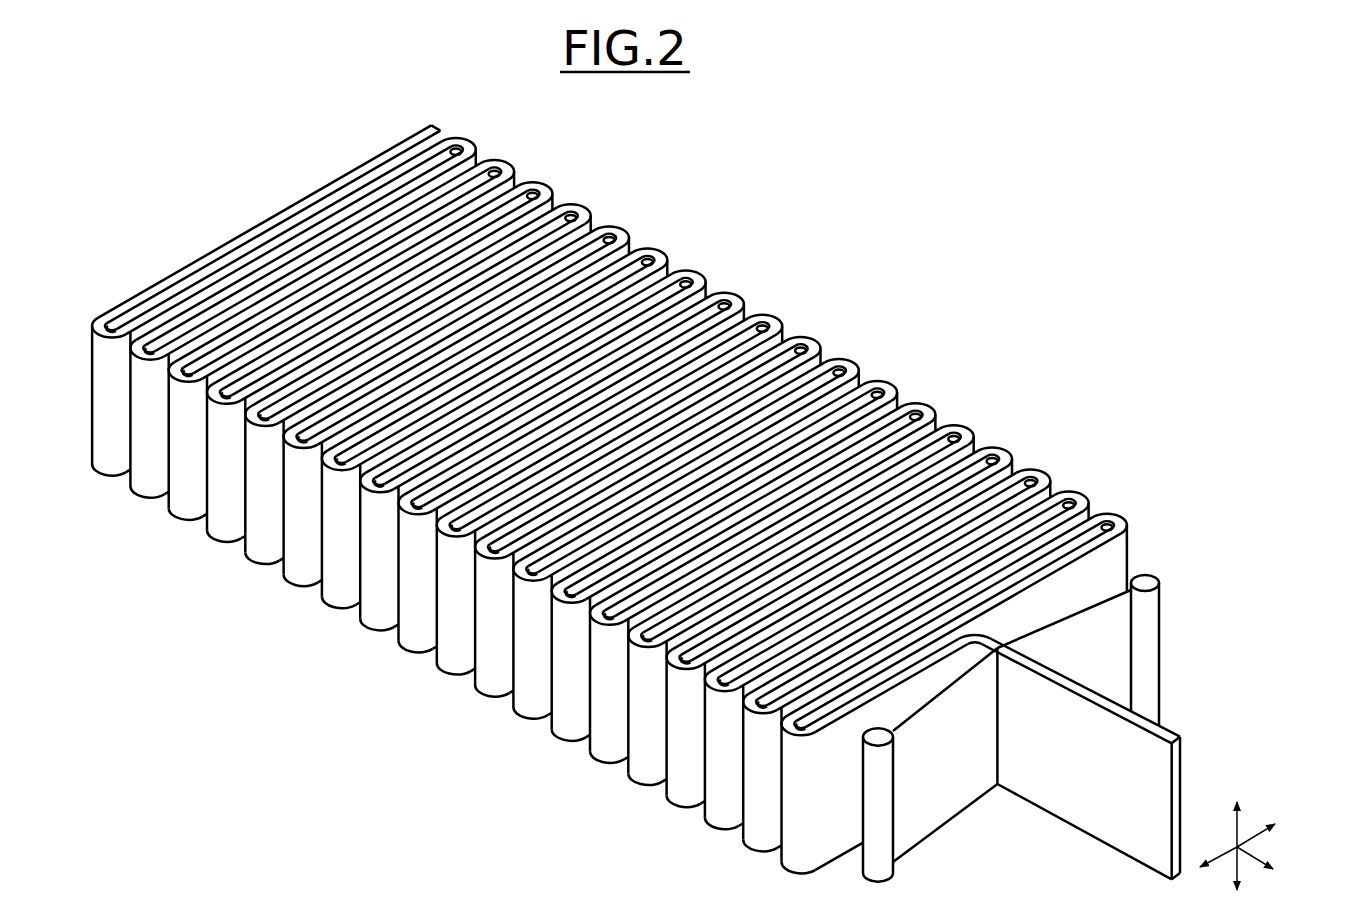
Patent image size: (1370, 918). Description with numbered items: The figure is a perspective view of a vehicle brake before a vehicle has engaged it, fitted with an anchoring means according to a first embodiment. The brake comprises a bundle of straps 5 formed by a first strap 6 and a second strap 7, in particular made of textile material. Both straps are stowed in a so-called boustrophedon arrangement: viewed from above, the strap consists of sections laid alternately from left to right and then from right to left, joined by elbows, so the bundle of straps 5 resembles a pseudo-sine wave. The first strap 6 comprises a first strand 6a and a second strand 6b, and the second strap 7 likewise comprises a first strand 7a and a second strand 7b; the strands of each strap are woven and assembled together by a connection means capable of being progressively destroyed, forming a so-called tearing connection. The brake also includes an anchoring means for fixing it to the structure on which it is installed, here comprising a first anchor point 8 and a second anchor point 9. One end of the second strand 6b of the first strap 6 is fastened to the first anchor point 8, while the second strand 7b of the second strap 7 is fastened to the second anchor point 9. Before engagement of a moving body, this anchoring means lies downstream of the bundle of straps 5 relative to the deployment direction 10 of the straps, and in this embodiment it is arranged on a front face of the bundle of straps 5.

The bundle of straps 5 is at (645, 511).
The first strap 6 is at (645, 503).
The first strand 6a is at (1186, 741).
The second strand 6b is at (1102, 656).
The second strap 7 is at (90, 326).
The first strand 7a is at (1086, 814).
The second strand 7b is at (942, 814).
The first anchor point 8 is at (1160, 646).
The second anchor point 9 is at (866, 875).
The deployment direction 10 is at (1284, 838).